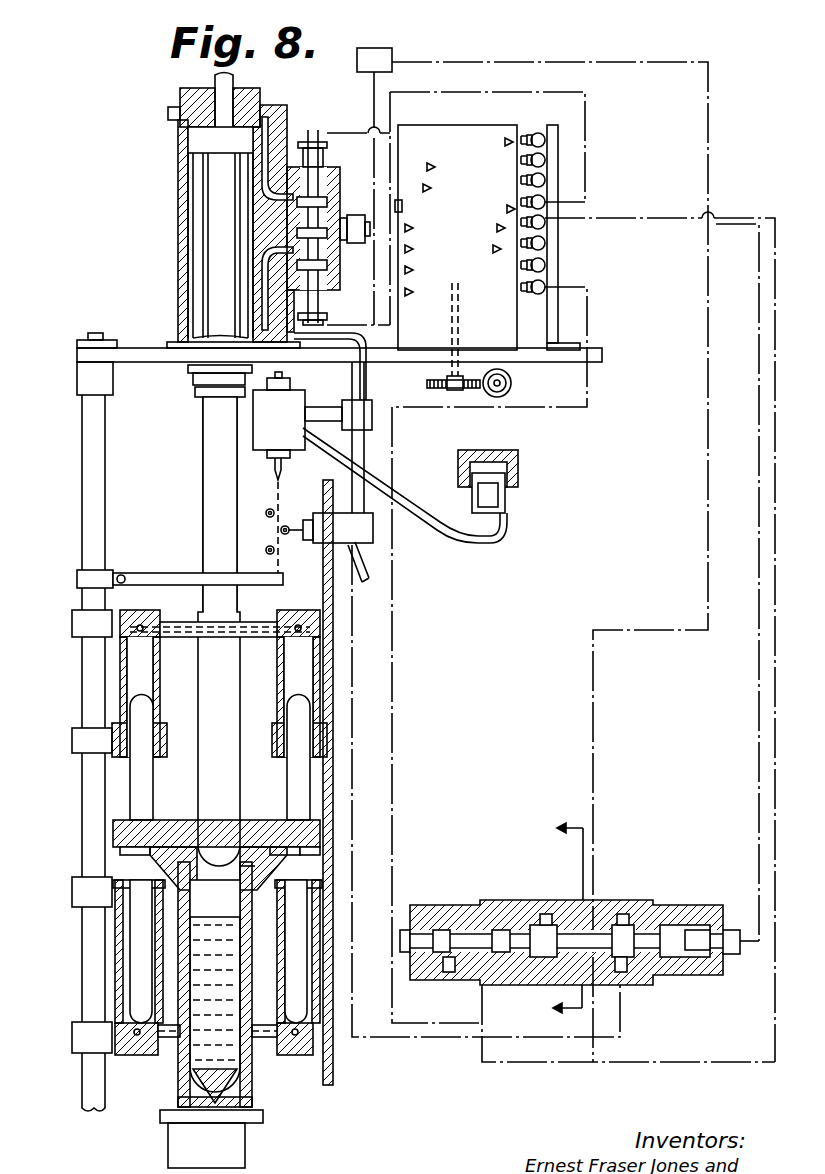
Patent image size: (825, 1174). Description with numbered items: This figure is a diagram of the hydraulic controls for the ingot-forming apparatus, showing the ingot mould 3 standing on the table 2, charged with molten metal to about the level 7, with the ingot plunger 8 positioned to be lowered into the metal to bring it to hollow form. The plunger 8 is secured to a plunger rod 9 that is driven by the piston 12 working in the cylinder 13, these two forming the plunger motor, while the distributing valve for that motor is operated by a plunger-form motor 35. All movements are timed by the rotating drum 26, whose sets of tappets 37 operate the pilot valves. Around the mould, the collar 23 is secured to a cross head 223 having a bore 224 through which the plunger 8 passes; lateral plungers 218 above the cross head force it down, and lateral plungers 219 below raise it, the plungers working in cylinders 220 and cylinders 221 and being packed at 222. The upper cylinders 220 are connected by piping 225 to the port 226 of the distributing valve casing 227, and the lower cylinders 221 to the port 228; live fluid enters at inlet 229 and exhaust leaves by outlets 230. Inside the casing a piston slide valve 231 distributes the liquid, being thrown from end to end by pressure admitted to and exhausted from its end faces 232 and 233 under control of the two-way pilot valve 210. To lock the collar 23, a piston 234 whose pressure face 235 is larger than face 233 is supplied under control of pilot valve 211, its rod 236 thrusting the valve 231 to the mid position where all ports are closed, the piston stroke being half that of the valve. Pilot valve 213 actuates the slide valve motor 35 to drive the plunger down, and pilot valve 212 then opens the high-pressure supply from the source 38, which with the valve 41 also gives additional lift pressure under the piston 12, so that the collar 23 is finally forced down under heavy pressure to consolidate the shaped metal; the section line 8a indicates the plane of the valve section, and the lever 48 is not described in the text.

The table 2 is at (227, 1148).
The mould 3 is at (243, 975).
The level 7 is at (245, 945).
The plunger 8 is at (217, 686).
The plunger rod 9 is at (220, 496).
The piston 12 is at (203, 140).
The cylinder 13 is at (180, 262).
The collar 23 is at (178, 878).
The rotating drum 26 is at (458, 148).
The motor 35 is at (313, 255).
The tappets 37 is at (437, 165).
The source of high pressure water 38 is at (487, 458).
The valve 41 is at (263, 435).
The lever valve 48 is at (355, 538).
The pilot valve 210 is at (547, 221).
The pilot valve 211 is at (548, 288).
The pilot valve 212 is at (548, 243).
The pilot valve 213 is at (548, 202).
The lateral plungers 218 is at (135, 800).
The lateral plungers 219 is at (140, 985).
The cylinders 220 is at (123, 667).
The cylinders 221 is at (128, 940).
The packing 222 is at (118, 742).
The cross head 223 is at (318, 824).
The bore 224 is at (238, 866).
The piping 225 is at (176, 625).
The port 226 is at (545, 920).
The distributing valve casing 227 is at (672, 918).
The port 228 is at (617, 918).
The live fluid inlet 229 is at (625, 945).
The exhaust fluid outlets 230 is at (498, 900).
The piston slide valve 231 is at (583, 925).
The end face 232 is at (505, 972).
The end face 233 is at (712, 962).
The piston 234 is at (440, 972).
The pressure face 235 is at (250, 995).
The rod 236 is at (462, 930).
The section line 8a is at (577, 917).